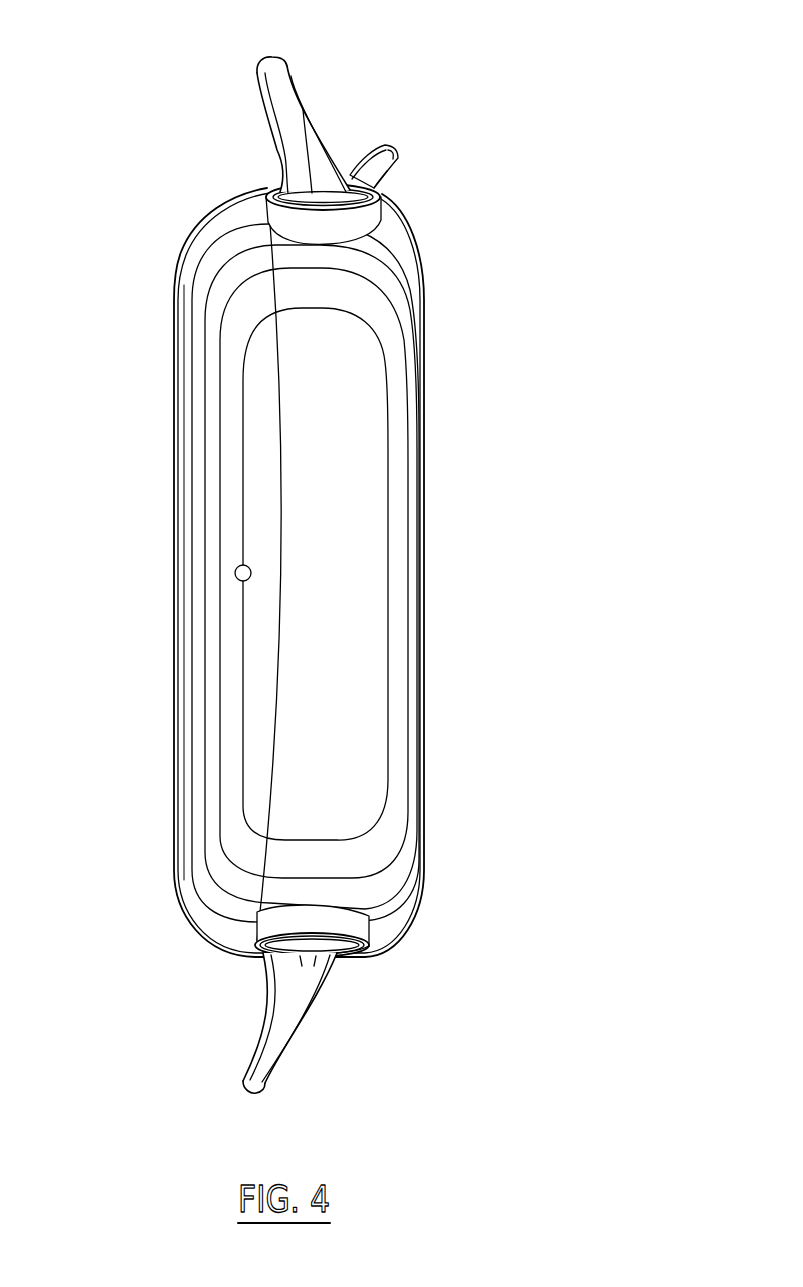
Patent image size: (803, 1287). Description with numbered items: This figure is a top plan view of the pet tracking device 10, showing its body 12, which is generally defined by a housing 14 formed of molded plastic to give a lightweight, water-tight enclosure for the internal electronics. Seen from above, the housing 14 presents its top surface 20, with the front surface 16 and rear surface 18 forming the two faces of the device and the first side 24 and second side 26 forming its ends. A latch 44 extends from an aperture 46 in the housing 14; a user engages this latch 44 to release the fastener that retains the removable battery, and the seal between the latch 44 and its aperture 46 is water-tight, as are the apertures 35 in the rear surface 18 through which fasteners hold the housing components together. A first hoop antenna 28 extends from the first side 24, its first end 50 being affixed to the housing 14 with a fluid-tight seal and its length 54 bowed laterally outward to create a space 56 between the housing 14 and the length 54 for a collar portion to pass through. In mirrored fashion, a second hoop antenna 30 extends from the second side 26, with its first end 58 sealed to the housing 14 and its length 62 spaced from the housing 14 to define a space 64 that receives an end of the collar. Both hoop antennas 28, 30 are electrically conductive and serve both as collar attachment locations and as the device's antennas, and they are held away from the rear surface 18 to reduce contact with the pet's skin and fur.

The pet tracking device 10 is at (362, 558).
The body 12 is at (464, 527).
The housing 14 is at (208, 753).
The front surface 16 is at (424, 662).
The rear surface 18 is at (173, 652).
The top surface 20 is at (343, 492).
The first side 24 is at (252, 962).
The second side 26 is at (262, 188).
The first hoop antenna 28 is at (276, 1080).
The second hoop antenna 30 is at (264, 57).
The apertures 35 is at (178, 273).
The latch 44 is at (390, 173).
The aperture 46 is at (385, 192).
The first end 50 is at (340, 970).
The length 54 is at (284, 1012).
The space 56 is at (279, 1028).
The first end 58 is at (312, 193).
The length 62 is at (278, 103).
The space 64 is at (271, 99).